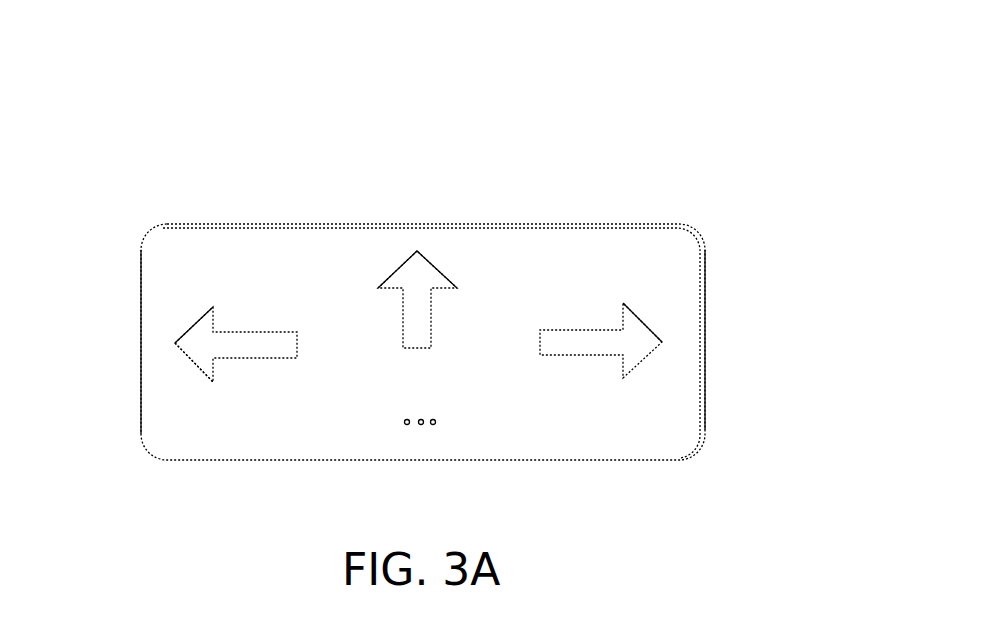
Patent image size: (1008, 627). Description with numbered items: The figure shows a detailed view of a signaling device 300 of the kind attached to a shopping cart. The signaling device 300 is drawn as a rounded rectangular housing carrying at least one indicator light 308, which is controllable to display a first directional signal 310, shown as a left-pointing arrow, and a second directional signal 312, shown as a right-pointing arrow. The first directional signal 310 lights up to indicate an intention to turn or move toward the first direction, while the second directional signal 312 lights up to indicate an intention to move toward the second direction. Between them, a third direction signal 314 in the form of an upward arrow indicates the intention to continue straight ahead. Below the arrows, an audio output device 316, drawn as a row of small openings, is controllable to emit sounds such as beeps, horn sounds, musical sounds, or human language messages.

The signaling device 300 is at (785, 138).
The indicator light 308 is at (190, 362).
The first directional signal 310 is at (185, 335).
The second directional signal 312 is at (648, 328).
The third direction signal 314 is at (425, 260).
The audio output device 316 is at (421, 437).